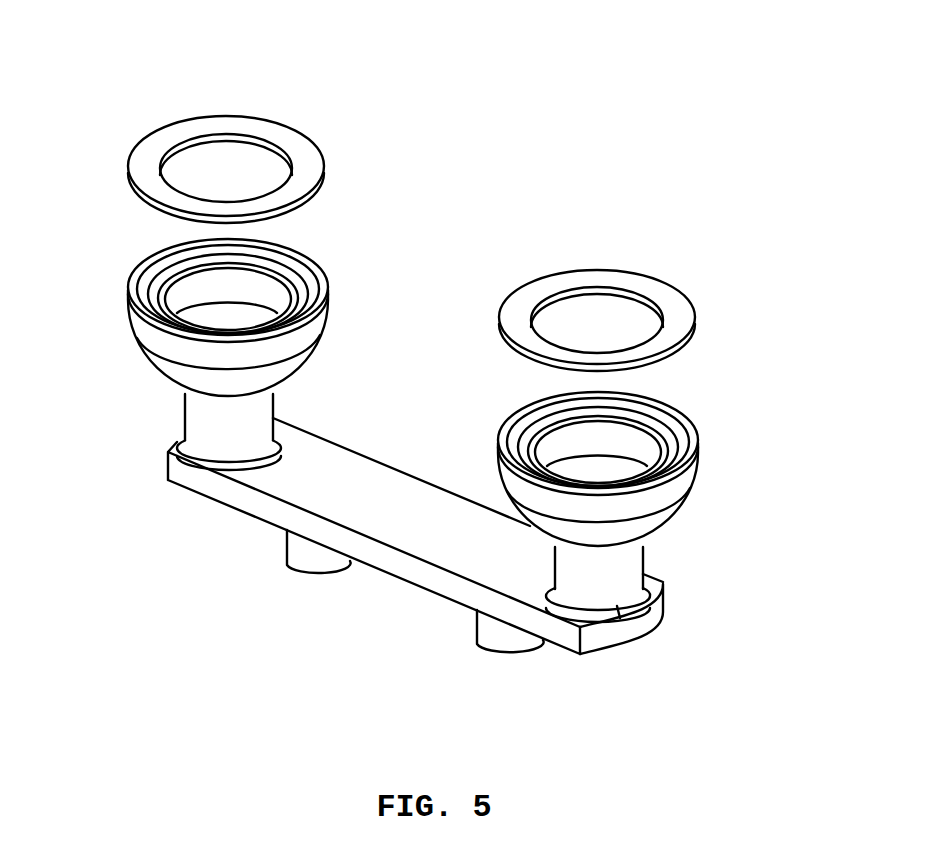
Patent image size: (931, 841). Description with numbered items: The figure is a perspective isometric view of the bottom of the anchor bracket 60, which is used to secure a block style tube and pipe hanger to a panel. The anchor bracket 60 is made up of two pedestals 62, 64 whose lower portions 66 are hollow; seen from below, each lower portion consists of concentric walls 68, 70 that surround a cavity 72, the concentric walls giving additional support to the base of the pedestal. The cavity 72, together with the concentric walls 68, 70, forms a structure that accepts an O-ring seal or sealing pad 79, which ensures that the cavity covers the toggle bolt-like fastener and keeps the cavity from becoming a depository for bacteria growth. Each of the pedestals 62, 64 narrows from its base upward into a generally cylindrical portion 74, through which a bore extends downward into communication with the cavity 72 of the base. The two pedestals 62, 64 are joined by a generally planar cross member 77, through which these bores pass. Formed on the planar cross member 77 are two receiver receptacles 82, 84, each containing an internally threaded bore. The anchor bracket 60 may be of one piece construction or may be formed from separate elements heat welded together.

The anchor bracket 60 is at (472, 143).
The pedestal 62 is at (130, 308).
The pedestal 64 is at (697, 477).
The lower portion of pedestal 66 is at (137, 358).
The concentric wall 68 is at (317, 268).
The concentric wall 70 is at (303, 288).
The cavity 72 is at (230, 318).
The generally cylindrical portion 74 is at (182, 422).
The planar cross member 77 is at (387, 455).
The sealing pad 79 is at (188, 122).
The receiver receptacle 82 is at (287, 562).
The receiver receptacle 84 is at (477, 643).